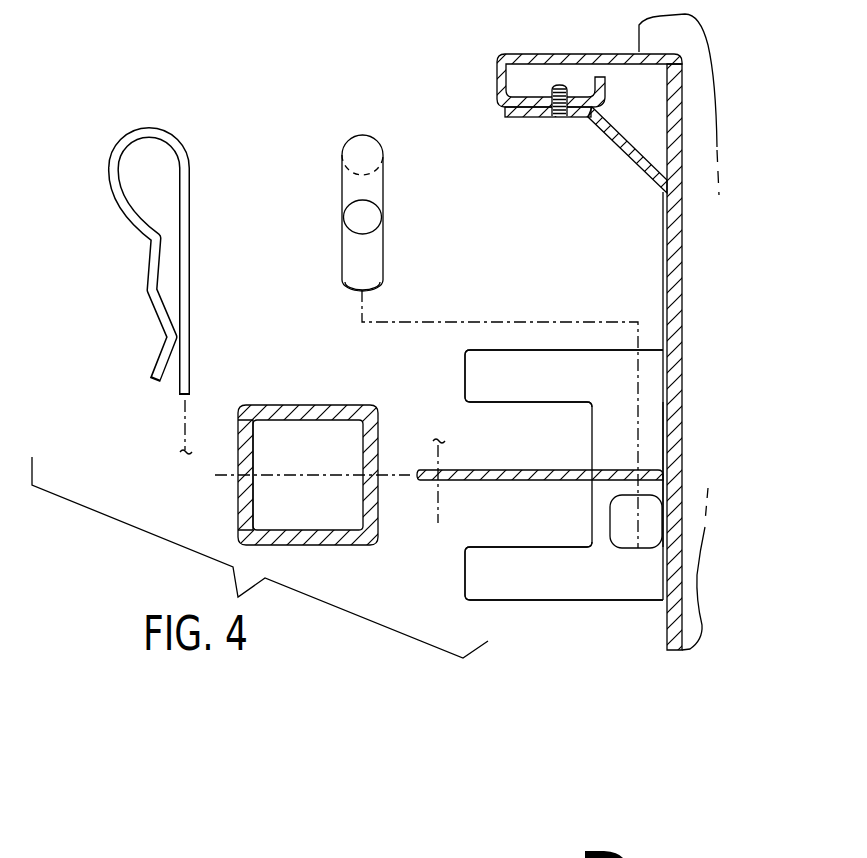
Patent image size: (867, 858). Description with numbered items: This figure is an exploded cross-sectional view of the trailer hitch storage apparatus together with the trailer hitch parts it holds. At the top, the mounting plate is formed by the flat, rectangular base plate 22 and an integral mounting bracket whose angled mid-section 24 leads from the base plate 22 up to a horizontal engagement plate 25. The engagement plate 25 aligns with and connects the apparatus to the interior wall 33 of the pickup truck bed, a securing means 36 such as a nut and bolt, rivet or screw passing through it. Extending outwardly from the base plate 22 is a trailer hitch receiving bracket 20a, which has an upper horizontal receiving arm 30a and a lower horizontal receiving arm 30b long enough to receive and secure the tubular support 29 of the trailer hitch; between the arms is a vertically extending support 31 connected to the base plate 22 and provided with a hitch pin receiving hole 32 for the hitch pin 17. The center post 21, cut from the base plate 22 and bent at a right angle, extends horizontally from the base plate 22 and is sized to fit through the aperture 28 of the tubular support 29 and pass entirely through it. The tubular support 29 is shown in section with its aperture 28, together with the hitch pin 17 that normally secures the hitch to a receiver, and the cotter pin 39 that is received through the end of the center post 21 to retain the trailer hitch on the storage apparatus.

The hitch pin 17 is at (378, 237).
The trailer hitch receiving bracket 20a is at (625, 417).
The center post 21 is at (488, 483).
The base plate 22 is at (669, 272).
The angled mid-section 24 is at (636, 152).
The horizontal engagement plate 25 is at (518, 118).
The aperture 28 is at (238, 482).
The tubular support 29 is at (300, 402).
The horizontal receiving arm 30a is at (548, 390).
The horizontal receiving arm 30b is at (525, 588).
The vertically extending support 31 is at (650, 437).
The hitch pin receiving hole 32 is at (648, 514).
The interior wall 33 is at (495, 88).
The securing means 36 is at (558, 118).
The cotter pin 39 is at (120, 143).